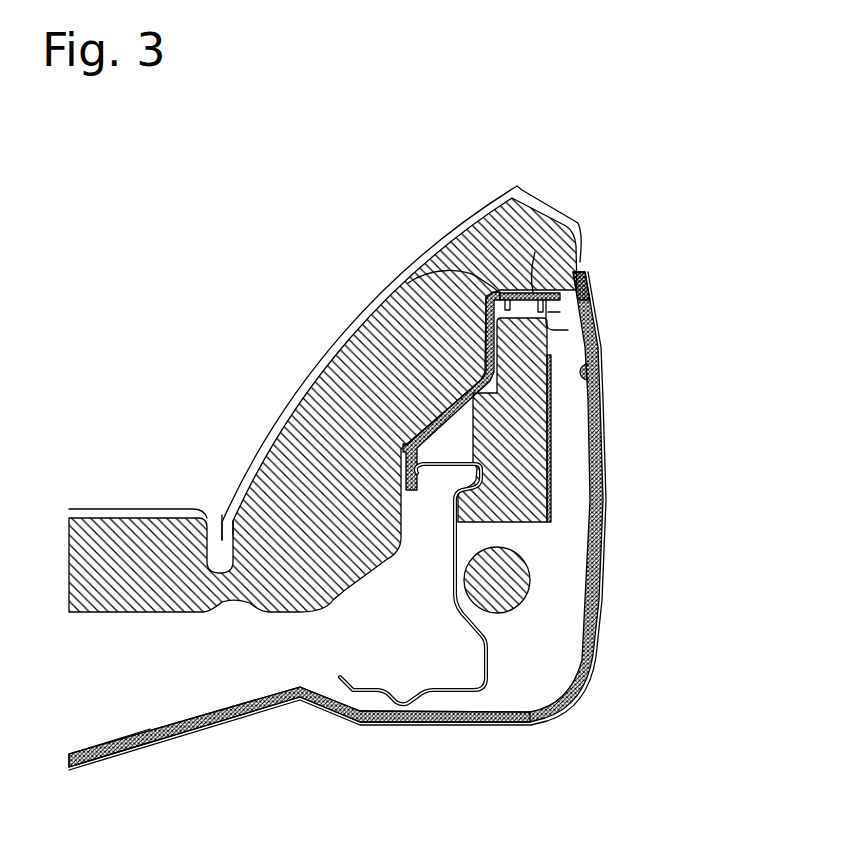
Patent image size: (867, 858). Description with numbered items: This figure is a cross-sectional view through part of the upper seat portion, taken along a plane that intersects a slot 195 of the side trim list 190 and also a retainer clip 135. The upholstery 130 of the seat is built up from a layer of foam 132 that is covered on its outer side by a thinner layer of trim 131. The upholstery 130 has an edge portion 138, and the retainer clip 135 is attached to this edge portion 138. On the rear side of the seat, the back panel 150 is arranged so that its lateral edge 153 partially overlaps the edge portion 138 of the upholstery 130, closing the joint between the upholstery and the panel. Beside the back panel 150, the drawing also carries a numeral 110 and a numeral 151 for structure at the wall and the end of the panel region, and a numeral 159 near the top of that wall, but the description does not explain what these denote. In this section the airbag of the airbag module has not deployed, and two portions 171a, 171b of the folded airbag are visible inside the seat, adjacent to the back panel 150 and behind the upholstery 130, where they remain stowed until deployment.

The housing wall 110 is at (490, 670).
The upholstery 130 is at (150, 489).
The trim 131 is at (303, 400).
The foam 132 is at (268, 490).
The retainer clip 135 is at (535, 252).
The edge portion 138 is at (553, 327).
The back panel 150 is at (387, 720).
The cover end portion 151 is at (104, 742).
The lateral edge 153 is at (586, 373).
The wall end portion 159 is at (573, 270).
The portion of the airbag 171a is at (524, 458).
The portion of the airbag 171b is at (500, 582).
The side trim list 190 is at (408, 283).
The slot 195 is at (540, 336).